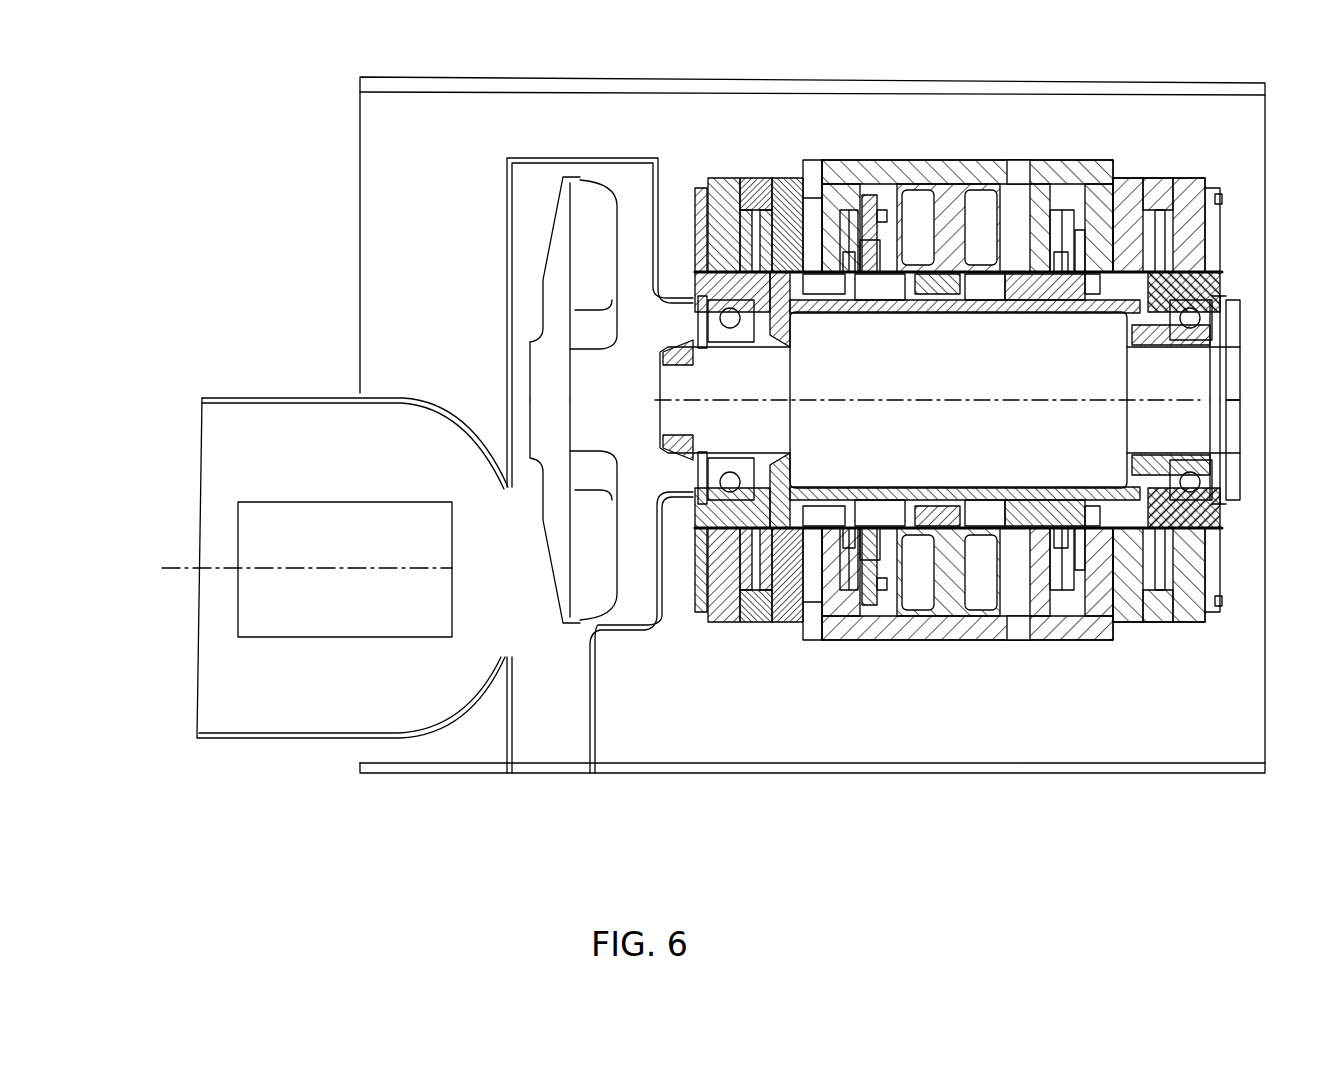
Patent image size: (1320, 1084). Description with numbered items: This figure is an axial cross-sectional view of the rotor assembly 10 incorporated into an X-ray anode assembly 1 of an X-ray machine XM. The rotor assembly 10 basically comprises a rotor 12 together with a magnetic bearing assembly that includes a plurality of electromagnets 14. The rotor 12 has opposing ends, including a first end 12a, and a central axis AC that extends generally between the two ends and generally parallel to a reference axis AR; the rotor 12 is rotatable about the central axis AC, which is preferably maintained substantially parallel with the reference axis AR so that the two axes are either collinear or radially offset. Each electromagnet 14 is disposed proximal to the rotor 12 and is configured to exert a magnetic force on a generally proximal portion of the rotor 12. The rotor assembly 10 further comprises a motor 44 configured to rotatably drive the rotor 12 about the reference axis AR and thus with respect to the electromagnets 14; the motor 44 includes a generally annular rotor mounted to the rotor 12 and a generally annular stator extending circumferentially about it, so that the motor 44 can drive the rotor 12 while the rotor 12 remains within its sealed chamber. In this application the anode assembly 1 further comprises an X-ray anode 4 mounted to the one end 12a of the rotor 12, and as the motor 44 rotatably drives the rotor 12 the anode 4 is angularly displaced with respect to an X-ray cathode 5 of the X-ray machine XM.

The X-ray machine XM is at (220, 237).
The X-ray anode assembly 1 is at (393, 207).
The X-ray anode 4 is at (533, 275).
The X-ray cathode 5 is at (252, 491).
The rotor assembly 10 is at (740, 122).
The rotor 12 is at (996, 512).
The first end of the rotor 12a is at (663, 352).
The electromagnet 14 is at (713, 158).
The motor 44 is at (952, 178).
The reference axis AR is at (1018, 398).
The central axis AC is at (927, 377).